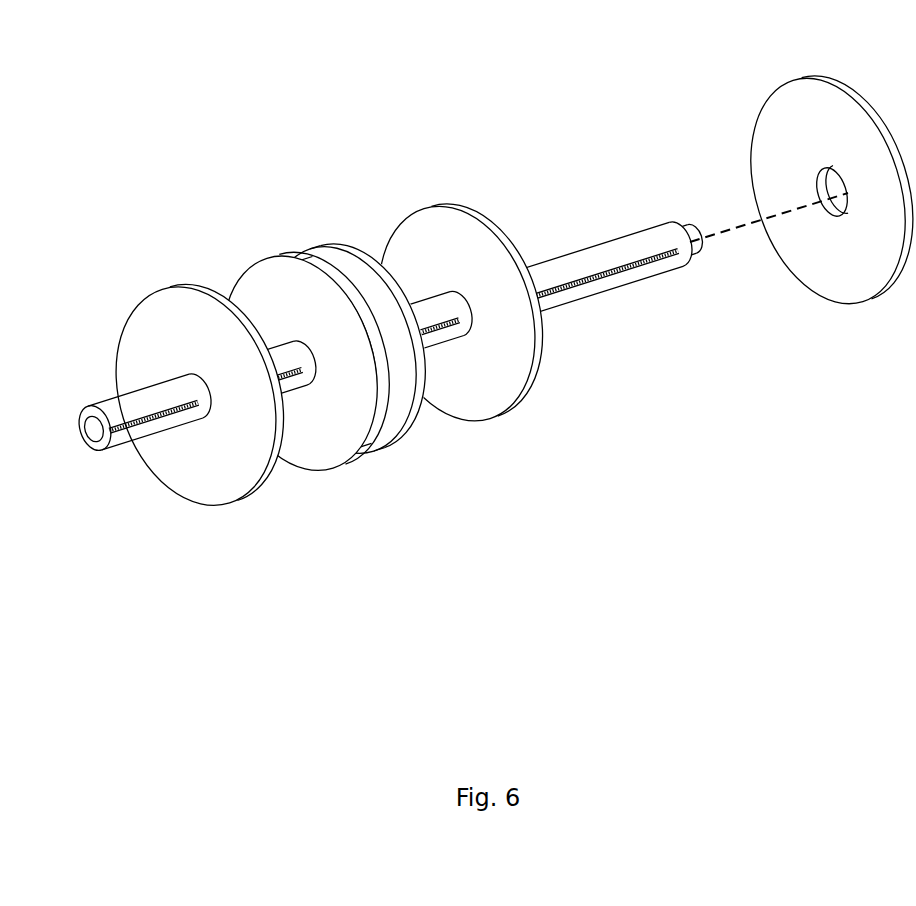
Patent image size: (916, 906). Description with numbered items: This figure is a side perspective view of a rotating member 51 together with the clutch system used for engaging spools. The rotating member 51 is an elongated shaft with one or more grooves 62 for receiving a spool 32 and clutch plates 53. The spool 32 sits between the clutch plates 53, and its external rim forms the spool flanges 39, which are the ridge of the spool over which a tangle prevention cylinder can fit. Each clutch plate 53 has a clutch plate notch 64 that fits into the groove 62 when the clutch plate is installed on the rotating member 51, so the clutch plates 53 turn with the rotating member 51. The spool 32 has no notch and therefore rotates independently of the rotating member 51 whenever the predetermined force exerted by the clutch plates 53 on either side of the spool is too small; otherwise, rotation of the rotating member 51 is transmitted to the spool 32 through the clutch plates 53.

The spool 32 is at (272, 245).
The spool flange 39 is at (403, 430).
The rotating member 51 is at (620, 247).
The clutch plate 53 is at (172, 310).
The groove 62 is at (79, 427).
The clutch plate notch 64 is at (815, 188).